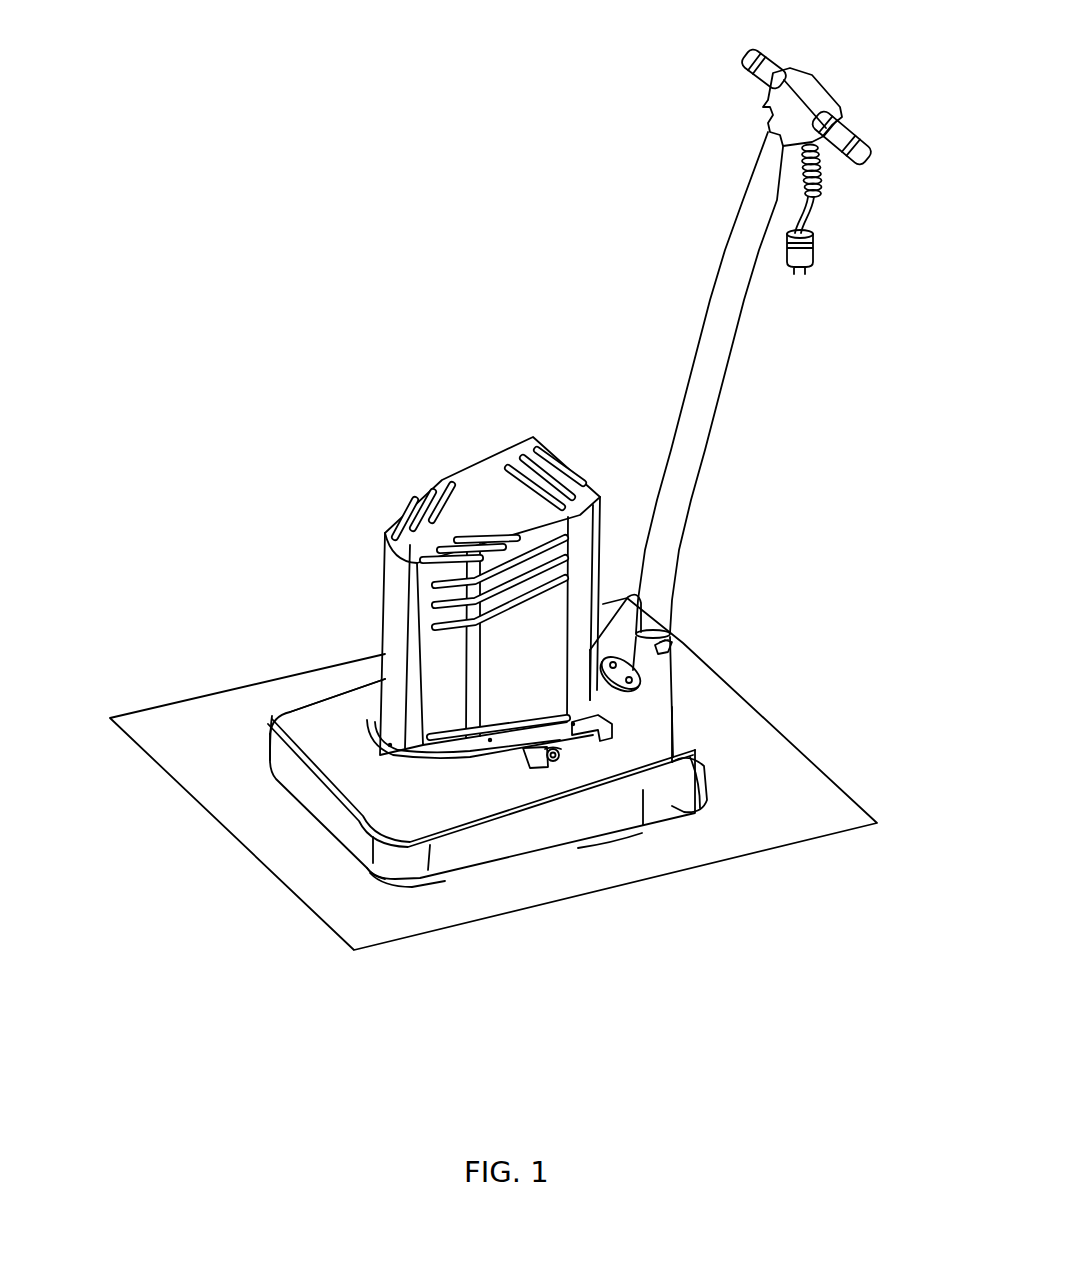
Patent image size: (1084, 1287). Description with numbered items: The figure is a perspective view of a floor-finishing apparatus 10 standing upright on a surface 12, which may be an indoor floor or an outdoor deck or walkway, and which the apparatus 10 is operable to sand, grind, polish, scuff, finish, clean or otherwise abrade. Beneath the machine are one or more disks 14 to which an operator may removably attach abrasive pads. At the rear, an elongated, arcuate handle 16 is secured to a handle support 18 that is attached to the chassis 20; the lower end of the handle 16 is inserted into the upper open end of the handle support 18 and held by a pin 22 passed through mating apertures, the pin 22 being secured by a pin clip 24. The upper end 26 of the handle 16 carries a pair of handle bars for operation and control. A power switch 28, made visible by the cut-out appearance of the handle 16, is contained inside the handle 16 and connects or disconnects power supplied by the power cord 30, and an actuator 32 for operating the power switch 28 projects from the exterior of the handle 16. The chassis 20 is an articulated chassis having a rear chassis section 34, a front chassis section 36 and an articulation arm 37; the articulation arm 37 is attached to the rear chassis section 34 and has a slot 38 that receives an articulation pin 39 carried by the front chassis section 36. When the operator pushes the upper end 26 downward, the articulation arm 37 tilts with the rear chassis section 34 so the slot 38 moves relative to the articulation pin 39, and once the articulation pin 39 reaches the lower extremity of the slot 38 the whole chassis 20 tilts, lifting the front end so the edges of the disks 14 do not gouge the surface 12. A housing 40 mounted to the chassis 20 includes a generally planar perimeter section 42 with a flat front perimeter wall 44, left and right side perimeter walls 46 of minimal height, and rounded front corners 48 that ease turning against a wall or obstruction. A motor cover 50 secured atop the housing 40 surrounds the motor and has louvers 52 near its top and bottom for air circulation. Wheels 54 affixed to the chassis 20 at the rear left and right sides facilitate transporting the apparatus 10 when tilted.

The apparatus 10 is at (328, 315).
The surface 12 is at (202, 742).
The disks 14 is at (415, 883).
The handle 16 is at (710, 348).
The handle support 18 is at (657, 673).
The chassis 20 is at (495, 780).
The pin 22 is at (678, 642).
The pin clip 24 is at (672, 647).
The upper end 26 is at (678, 392).
The power switch 28 is at (770, 115).
The power cord 30 is at (812, 255).
The actuator 32 is at (760, 105).
The rear chassis section 34 is at (637, 703).
The front chassis section 36 is at (507, 767).
The articulation arm 37 is at (592, 752).
The slot 38 is at (557, 762).
The articulation pin 39 is at (559, 760).
The housing 40 is at (403, 768).
The perimeter section 42 is at (302, 722).
The front perimeter wall 44 is at (327, 808).
The side perimeter walls 46 is at (343, 665).
The rounded front corners 48 is at (270, 758).
The motor cover 50 is at (493, 521).
The louvers 52 is at (547, 537).
The wheels 54 is at (702, 783).